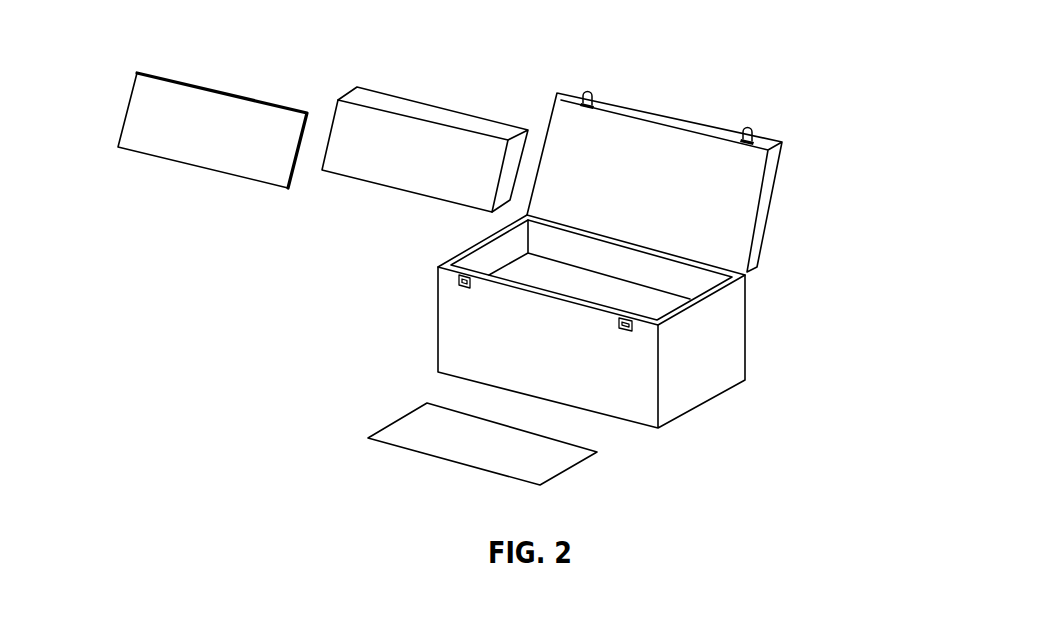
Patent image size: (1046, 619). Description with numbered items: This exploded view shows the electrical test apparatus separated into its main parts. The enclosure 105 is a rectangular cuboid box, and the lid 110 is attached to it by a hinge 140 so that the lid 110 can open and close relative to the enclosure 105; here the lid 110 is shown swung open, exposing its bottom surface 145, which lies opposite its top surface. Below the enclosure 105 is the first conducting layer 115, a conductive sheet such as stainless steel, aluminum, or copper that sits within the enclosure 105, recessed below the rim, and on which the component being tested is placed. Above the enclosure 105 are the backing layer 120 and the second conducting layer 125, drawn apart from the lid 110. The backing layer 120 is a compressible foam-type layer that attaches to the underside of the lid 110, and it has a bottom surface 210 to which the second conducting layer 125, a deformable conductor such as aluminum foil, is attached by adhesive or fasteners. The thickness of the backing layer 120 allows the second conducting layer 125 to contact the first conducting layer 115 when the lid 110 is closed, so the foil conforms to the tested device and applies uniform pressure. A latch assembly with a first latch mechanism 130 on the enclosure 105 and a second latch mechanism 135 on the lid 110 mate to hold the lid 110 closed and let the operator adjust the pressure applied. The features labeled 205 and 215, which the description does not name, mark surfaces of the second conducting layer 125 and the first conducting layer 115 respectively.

The enclosure 105 is at (457, 293).
The lid 110 is at (668, 113).
The first conducting layer 115 is at (437, 432).
The backing layer 120 is at (351, 90).
The second conducting layer 125 is at (135, 73).
The first latch mechanism 130 is at (627, 328).
The second latch mechanism 135 is at (750, 132).
The hinge 140 is at (700, 262).
The bottom surface 145 is at (715, 192).
The panel surface 205 is at (233, 148).
The bottom surface 210 is at (428, 172).
The panel edge 215 is at (461, 464).